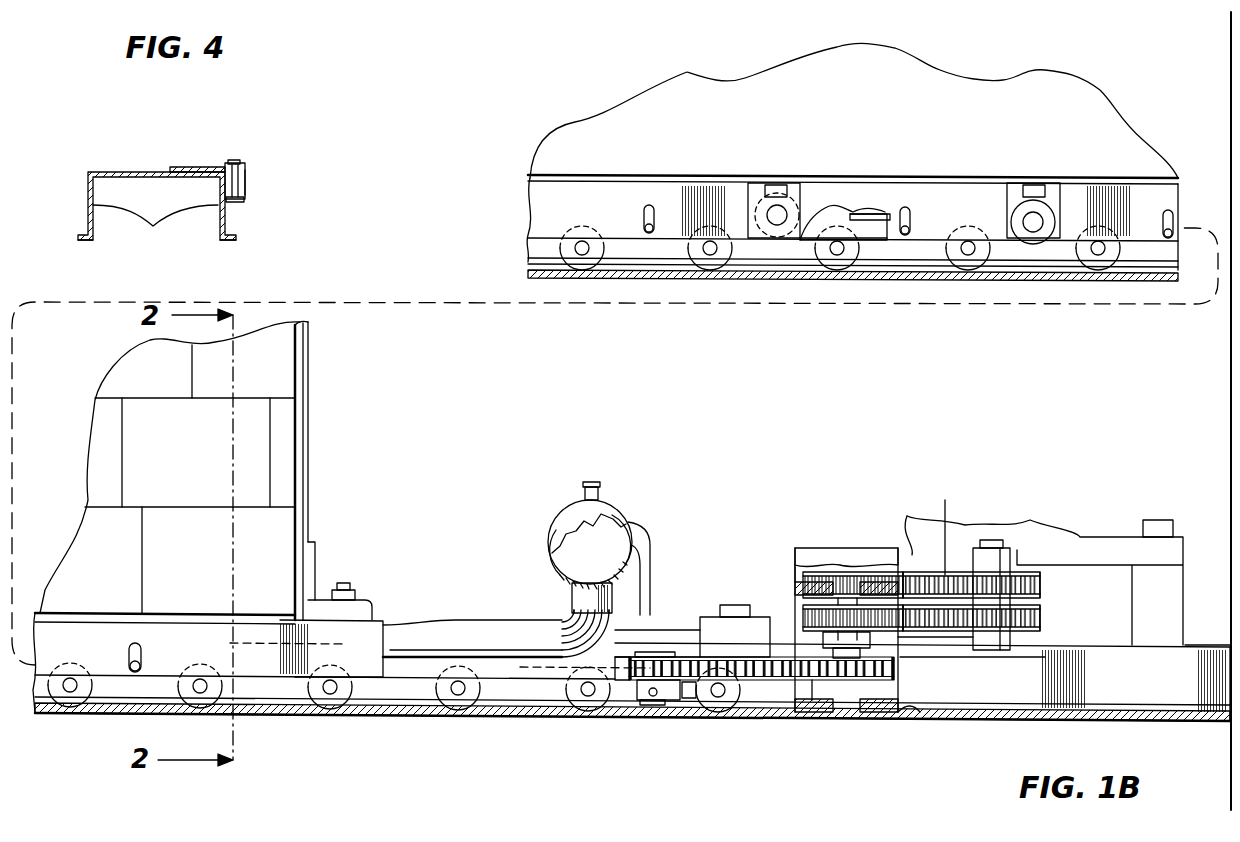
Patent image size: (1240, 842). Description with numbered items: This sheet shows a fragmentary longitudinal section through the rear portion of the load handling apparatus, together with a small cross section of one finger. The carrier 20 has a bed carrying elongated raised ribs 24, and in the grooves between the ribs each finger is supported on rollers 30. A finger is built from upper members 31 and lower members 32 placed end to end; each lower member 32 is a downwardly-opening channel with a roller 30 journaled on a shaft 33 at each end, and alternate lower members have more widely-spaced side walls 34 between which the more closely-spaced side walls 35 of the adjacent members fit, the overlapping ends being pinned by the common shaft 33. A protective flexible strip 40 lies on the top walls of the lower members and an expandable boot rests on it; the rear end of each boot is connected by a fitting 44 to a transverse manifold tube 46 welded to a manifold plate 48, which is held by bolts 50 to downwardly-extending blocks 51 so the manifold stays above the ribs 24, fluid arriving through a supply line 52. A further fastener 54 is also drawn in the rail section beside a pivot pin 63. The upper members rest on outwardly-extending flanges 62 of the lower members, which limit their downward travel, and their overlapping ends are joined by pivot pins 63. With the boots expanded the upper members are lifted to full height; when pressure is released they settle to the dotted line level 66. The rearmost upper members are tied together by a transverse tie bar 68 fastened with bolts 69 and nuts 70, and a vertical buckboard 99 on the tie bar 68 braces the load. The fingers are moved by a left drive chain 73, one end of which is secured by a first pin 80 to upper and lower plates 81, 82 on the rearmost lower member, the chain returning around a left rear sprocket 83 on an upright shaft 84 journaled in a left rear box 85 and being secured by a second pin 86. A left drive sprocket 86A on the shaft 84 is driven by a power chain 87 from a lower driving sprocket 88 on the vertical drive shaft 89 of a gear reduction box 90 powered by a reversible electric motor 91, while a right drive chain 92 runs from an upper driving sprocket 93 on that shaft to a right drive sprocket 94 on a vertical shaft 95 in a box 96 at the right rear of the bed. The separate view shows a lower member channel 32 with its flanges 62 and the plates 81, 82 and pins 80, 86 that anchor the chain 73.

In FIG. 1B, the carrier 20 is at (612, 282).
In FIG. 1B, the raised ribs 24 is at (1195, 642).
In FIG. 1B, the rollers 30 is at (340, 722).
In FIG. 1B, the upper members 31 is at (188, 618).
In FIG. 4, the lower members 32 is at (118, 172).
In FIG. 1B, the shaft 33 is at (610, 718).
In FIG. 1B, the vertical side walls 34 is at (832, 262).
In FIG. 1B, the vertical side walls 35 is at (770, 255).
In FIG. 1B, the protective flexible strip 40 is at (870, 213).
In FIG. 1B, the fitting 44 is at (575, 595).
In FIG. 1B, the manifold tube 46 is at (652, 540).
In FIG. 1B, the manifold plate 48 is at (628, 518).
In FIG. 1B, the bolts 50 is at (738, 604).
In FIG. 1B, the blocks 51 is at (755, 625).
In FIG. 1B, the supply line 52 is at (592, 482).
In FIG. 1B, the bolt housing 54 is at (1025, 215).
In FIG. 4, the flanges 62 is at (80, 232).
In FIG. 1B, the flanges 62 is at (660, 300).
In FIG. 1B, the pivot pins 63 is at (777, 215).
In FIG. 1B, the dotted line level 66 is at (268, 640).
In FIG. 1B, the tie bar 68 is at (315, 560).
In FIG. 1B, the bolts 69 is at (345, 583).
In FIG. 1B, the nuts 70 is at (372, 595).
In FIG. 4, the left drive chain 73 is at (248, 165).
In FIG. 1B, the left drive chain 73 is at (790, 712).
In FIG. 4, the first pin 80 is at (237, 165).
In FIG. 1B, the first pin 80 is at (645, 702).
In FIG. 4, the upper plate 81 is at (205, 167).
In FIG. 1B, the upper plate 81 is at (650, 655).
In FIG. 4, the lower plate 82 is at (244, 200).
In FIG. 1B, the lower plate 82 is at (664, 705).
In FIG. 1B, the left rear sprocket 83 is at (812, 700).
In FIG. 1B, the upright shaft 84 is at (880, 655).
In FIG. 4, the left rear box 85 is at (155, 229).
In FIG. 1B, the left rear box 85 is at (900, 715).
In FIG. 1B, the second pin 86 is at (685, 657).
In FIG. 1B, the left drive sprocket 86A is at (880, 570).
In FIG. 1B, the power chain 87 is at (965, 640).
In FIG. 1B, the lower driving sprocket 88 is at (1045, 620).
In FIG. 1B, the vertical drive shaft 89 is at (990, 548).
In FIG. 1B, the gear reduction box 90 is at (1045, 540).
In FIG. 1B, the reversible electric motor 91 is at (1080, 535).
In FIG. 1B, the right drive chain 92 is at (945, 523).
In FIG. 1B, the upper driving sprocket 93 is at (1045, 580).
In FIG. 1B, the right drive sprocket 94 is at (812, 565).
In FIG. 1B, the vertical shaft 95 is at (830, 575).
In FIG. 1B, the box 96 is at (795, 560).
In FIG. 1B, the buckboard 99 is at (310, 452).